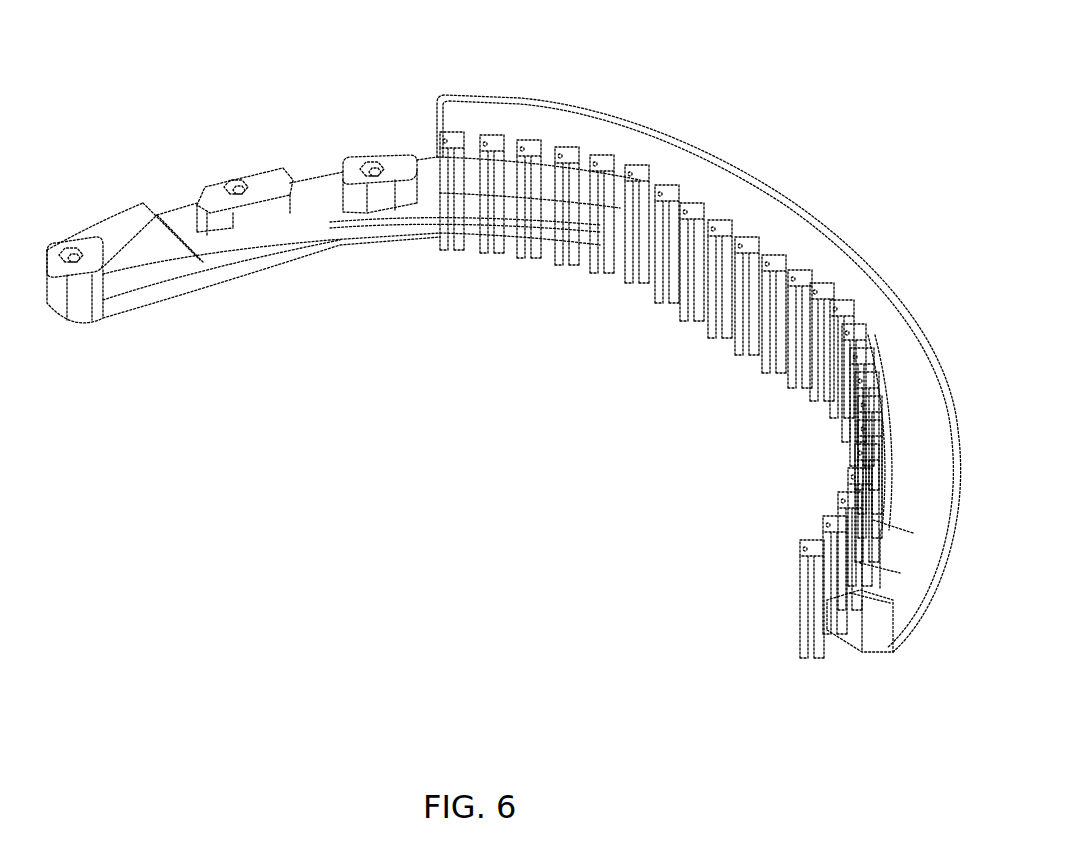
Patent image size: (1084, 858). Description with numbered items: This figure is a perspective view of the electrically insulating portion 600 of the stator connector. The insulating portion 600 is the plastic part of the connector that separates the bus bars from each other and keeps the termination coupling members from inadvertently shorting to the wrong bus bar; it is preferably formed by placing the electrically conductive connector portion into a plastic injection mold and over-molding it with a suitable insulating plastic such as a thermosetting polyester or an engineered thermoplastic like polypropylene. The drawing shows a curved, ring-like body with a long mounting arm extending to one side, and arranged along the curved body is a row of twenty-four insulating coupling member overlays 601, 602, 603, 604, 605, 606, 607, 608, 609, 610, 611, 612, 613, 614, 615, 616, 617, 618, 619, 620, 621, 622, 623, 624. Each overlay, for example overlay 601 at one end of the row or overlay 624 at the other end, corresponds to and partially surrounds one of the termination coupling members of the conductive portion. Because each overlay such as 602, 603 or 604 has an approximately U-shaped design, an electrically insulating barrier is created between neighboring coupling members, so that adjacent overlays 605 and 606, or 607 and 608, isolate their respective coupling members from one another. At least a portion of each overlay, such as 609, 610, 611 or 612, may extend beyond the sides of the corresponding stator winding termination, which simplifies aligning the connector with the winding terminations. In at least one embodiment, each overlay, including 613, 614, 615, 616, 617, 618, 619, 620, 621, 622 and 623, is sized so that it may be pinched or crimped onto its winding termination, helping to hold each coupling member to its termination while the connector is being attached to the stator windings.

The electrically insulating portion 600 is at (527, 370).
The insulating coupling member overlay 601 is at (448, 132).
The insulating coupling member overlay 602 is at (488, 135).
The insulating coupling member overlay 603 is at (527, 140).
The insulating coupling member overlay 604 is at (565, 147).
The insulating coupling member overlay 605 is at (600, 155).
The insulating coupling member overlay 606 is at (630, 167).
The insulating coupling member overlay 607 is at (662, 186).
The insulating coupling member overlay 608 is at (690, 198).
The insulating coupling member overlay 609 is at (717, 221).
The insulating coupling member overlay 610 is at (742, 238).
The insulating coupling member overlay 611 is at (772, 257).
The insulating coupling member overlay 612 is at (795, 272).
The insulating coupling member overlay 613 is at (815, 287).
The insulating coupling member overlay 614 is at (835, 305).
The insulating coupling member overlay 615 is at (848, 326).
The insulating coupling member overlay 616 is at (852, 350).
The insulating coupling member overlay 617 is at (864, 374).
The insulating coupling member overlay 618 is at (860, 398).
The insulating coupling member overlay 619 is at (866, 424).
The insulating coupling member overlay 620 is at (858, 447).
The insulating coupling member overlay 621 is at (850, 470).
The insulating coupling member overlay 622 is at (840, 494).
The insulating coupling member overlay 623 is at (825, 518).
The insulating coupling member overlay 624 is at (803, 543).